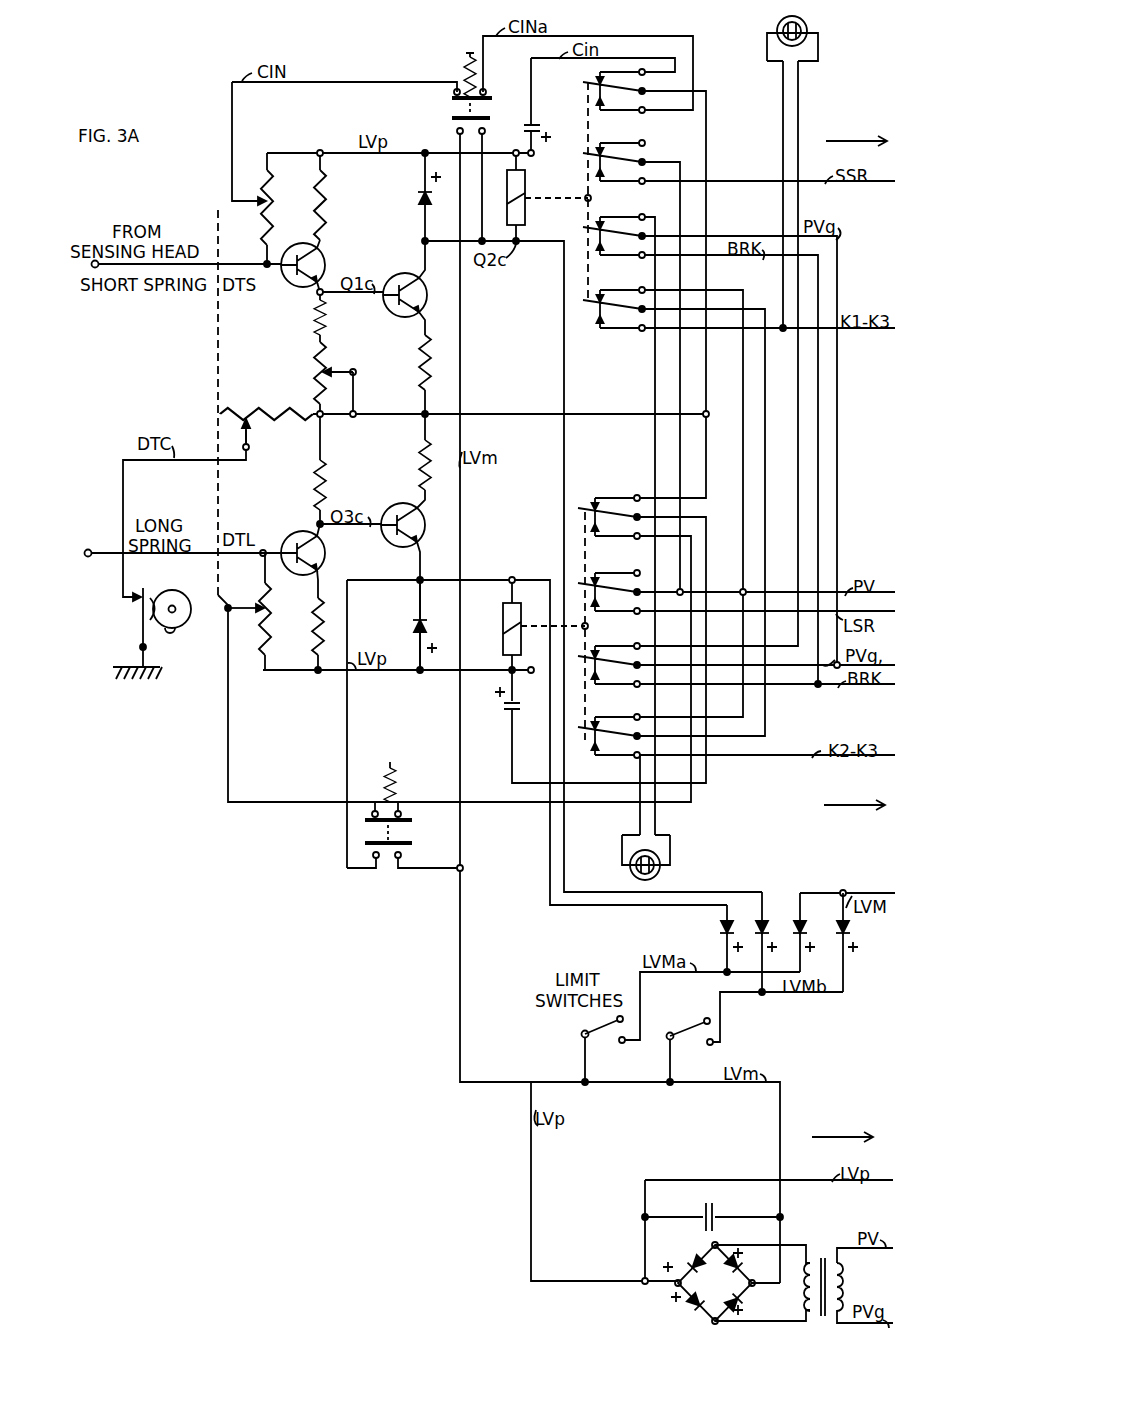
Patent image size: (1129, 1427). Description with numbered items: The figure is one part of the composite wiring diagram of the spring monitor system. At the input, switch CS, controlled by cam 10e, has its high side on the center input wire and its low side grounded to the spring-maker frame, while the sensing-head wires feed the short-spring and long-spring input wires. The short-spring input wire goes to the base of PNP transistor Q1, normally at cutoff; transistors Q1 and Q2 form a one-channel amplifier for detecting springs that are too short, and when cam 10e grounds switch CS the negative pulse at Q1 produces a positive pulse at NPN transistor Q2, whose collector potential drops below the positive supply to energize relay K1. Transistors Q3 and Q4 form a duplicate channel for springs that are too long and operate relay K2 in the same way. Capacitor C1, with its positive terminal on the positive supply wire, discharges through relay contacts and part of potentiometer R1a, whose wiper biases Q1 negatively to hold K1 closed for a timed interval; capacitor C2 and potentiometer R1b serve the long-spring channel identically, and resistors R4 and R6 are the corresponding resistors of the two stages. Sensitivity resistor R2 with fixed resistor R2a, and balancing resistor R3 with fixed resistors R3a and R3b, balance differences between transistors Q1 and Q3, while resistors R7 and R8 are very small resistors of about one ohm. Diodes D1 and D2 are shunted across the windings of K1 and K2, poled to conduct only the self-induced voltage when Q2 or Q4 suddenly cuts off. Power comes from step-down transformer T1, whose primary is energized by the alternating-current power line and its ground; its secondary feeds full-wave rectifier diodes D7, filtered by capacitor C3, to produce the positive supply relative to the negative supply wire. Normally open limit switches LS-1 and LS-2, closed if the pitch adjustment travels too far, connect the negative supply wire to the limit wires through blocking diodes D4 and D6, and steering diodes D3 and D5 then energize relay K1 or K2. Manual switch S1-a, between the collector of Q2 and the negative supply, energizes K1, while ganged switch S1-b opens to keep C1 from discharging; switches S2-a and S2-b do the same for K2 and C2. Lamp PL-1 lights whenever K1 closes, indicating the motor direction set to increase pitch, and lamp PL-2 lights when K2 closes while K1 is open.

The potentiometer R1a is at (274, 202).
The potentiometer R1b is at (252, 628).
The resistor R4 is at (333, 205).
The fixed resistor R3a is at (338, 317).
The balancing resistor R3 is at (338, 360).
The fixed resistor R3b is at (328, 490).
The sensitivity resistor portion R2 is at (244, 415).
The fixed resistor R2a is at (275, 440).
The resistor R6 is at (294, 639).
The resistor R7 is at (440, 352).
The resistor R8 is at (410, 470).
The PNP transistor Q1 is at (320, 250).
The NPN transistor Q2 is at (420, 276).
The transistor Q3 is at (286, 542).
The transistor Q4 is at (420, 508).
The diode D1 is at (420, 214).
The diode D2 is at (414, 627).
The steering diode D3 is at (770, 905).
The diode D4 is at (848, 905).
The steering diode D5 is at (734, 905).
The diode D6 is at (808, 905).
The full wave rectifier diodes D7 is at (688, 1302).
The capacitor C1 is at (544, 121).
The capacitor C2 is at (496, 706).
The filter capacitor C3 is at (704, 1212).
The relay K1 is at (577, 191).
The relay K2 is at (572, 618).
The manual switch S1-a is at (449, 95).
The manual switch S1-b is at (449, 127).
The manual switch S2-a is at (347, 845).
The manual switch S2-b is at (347, 795).
The lamp PL-1 is at (807, 32).
The lamp PL-2 is at (630, 869).
The limit switch LS-1 is at (688, 1039).
The limit switch LS-2 is at (603, 1036).
The step down transformer T1 is at (823, 1271).
The cam 10e is at (187, 600).
The switch CS is at (164, 680).